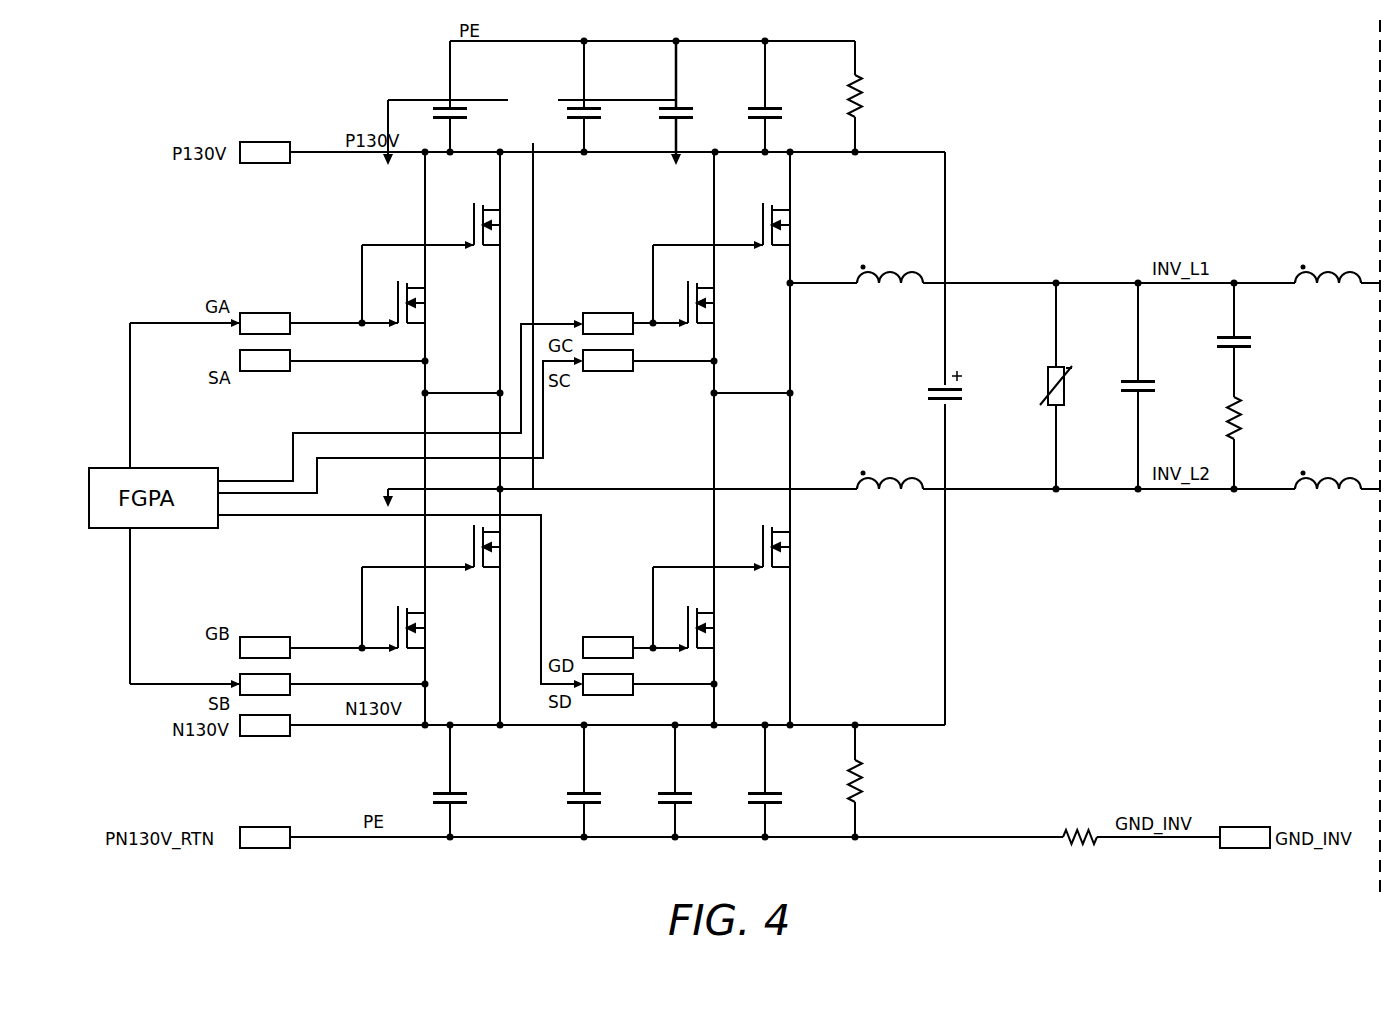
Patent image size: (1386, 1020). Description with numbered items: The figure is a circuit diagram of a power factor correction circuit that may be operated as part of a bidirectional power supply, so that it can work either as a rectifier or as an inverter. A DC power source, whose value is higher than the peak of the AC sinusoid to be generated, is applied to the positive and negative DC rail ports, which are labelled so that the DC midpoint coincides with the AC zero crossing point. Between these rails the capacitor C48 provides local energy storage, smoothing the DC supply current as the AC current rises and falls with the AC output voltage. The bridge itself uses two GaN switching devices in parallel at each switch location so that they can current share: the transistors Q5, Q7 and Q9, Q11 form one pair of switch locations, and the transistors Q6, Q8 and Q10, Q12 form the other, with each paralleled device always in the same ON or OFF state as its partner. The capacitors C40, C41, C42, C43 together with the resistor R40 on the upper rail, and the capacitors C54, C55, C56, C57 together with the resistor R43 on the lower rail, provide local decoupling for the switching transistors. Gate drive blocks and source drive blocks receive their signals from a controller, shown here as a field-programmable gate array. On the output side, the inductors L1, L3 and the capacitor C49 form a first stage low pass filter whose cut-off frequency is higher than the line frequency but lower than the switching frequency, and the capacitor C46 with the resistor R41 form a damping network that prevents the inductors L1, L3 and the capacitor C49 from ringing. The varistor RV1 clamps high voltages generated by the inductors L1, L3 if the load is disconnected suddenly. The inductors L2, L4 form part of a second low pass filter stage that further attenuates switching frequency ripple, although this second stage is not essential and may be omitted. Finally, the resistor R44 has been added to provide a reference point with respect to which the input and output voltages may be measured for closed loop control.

The decoupling capacitor C40 is at (463, 96).
The decoupling capacitor C41 is at (597, 96).
The decoupling capacitor C42 is at (689, 98).
The decoupling capacitor C43 is at (778, 96).
The resistor R40 is at (897, 96).
The decoupling capacitor C54 is at (463, 781).
The decoupling capacitor C55 is at (597, 781).
The decoupling capacitor C56 is at (688, 781).
The decoupling capacitor C57 is at (778, 781).
The resistor R43 is at (897, 781).
The reference resistor R44 is at (1080, 865).
The GaN switching device Q5 is at (536, 226).
The GaN switching device Q6 is at (825, 226).
The GaN switching device Q7 is at (460, 298).
The GaN switching device Q8 is at (750, 298).
The GaN switching device Q9 is at (536, 549).
The GaN switching device Q10 is at (825, 549).
The GaN switching device Q11 is at (460, 624).
The GaN switching device Q12 is at (750, 628).
The inductor L1 is at (890, 302).
The inductor L2 is at (1327, 247).
The inductor L3 is at (890, 456).
The inductor L4 is at (1327, 510).
The capacitor C48 is at (977, 386).
The varistor RV1 is at (1073, 386).
The capacitor C49 is at (1164, 386).
The capacitor C46 is at (1260, 340).
The resistor R41 is at (1273, 441).